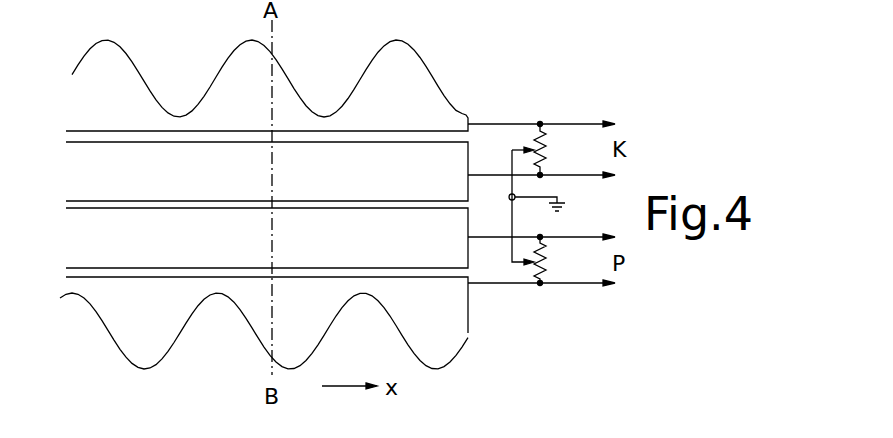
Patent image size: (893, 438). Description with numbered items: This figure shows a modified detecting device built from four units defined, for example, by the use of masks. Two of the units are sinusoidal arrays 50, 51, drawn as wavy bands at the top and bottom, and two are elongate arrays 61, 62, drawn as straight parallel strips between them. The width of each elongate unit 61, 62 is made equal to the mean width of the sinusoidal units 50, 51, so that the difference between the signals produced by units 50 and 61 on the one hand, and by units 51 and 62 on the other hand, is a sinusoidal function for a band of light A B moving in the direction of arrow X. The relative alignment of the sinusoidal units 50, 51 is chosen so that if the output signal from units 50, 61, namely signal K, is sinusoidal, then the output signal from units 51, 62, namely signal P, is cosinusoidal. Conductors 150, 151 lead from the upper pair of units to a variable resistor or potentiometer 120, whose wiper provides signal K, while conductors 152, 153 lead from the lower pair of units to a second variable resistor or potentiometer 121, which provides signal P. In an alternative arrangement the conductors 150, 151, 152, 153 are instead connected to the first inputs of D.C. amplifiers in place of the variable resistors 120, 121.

The sinusoidal array unit 50 is at (234, 78).
The sinusoidal array unit 51 is at (440, 343).
The elongate array unit 61 is at (110, 177).
The elongate array unit 62 is at (139, 245).
The conductor 150 is at (492, 123).
The conductor 151 is at (481, 173).
The conductor 152 is at (483, 236).
The conductor 153 is at (490, 285).
The variable resistor 120 is at (547, 168).
The variable resistor 121 is at (549, 239).